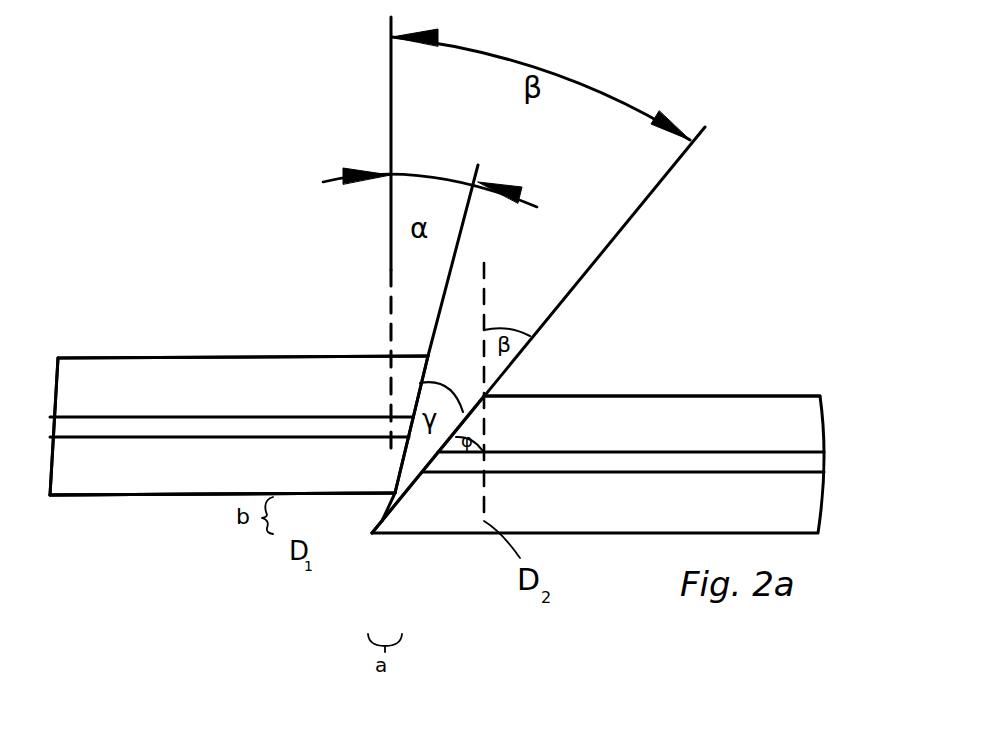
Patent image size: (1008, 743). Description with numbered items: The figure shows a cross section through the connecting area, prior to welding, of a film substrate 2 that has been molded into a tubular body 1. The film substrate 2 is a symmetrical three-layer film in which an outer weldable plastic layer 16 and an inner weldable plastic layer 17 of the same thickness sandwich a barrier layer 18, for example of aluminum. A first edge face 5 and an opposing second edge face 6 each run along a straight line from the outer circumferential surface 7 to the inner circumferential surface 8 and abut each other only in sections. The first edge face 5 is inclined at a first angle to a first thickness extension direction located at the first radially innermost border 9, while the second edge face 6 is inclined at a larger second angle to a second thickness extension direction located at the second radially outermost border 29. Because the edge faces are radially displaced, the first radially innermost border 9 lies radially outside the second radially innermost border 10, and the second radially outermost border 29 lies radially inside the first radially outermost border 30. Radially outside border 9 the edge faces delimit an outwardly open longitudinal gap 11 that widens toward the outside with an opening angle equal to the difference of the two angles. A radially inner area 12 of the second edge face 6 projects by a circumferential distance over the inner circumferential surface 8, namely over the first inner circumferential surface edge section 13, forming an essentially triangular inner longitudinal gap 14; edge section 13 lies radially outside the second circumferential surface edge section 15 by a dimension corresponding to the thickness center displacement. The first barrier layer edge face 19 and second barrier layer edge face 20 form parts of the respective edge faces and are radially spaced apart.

The tubular body 1 is at (648, 398).
The film substrate 2 is at (93, 487).
The first edge face 5 is at (410, 418).
The second edge face 6 is at (424, 472).
The outer circumferential surface 7 is at (198, 356).
The inner circumferential surface 8 is at (202, 502).
The first radially innermost border 9 is at (377, 497).
The second radially innermost border 10 is at (373, 534).
The outwardly open longitudinal gap 11 is at (493, 397).
The radially inner area 12 is at (413, 537).
The first inner circumferential surface edge section 13 is at (377, 450).
The inner longitudinal gap 14 is at (375, 508).
The second circumferential surface edge section 15 is at (387, 533).
The outer weldable plastic layer 16 is at (103, 375).
The inner weldable plastic layer 17 is at (145, 472).
The barrier layer 18 is at (72, 425).
The first barrier layer edge face 19 is at (415, 402).
The second barrier layer edge face 20 is at (484, 470).
The second radially outermost border 29 is at (520, 395).
The first radially outermost border 30 is at (440, 367).